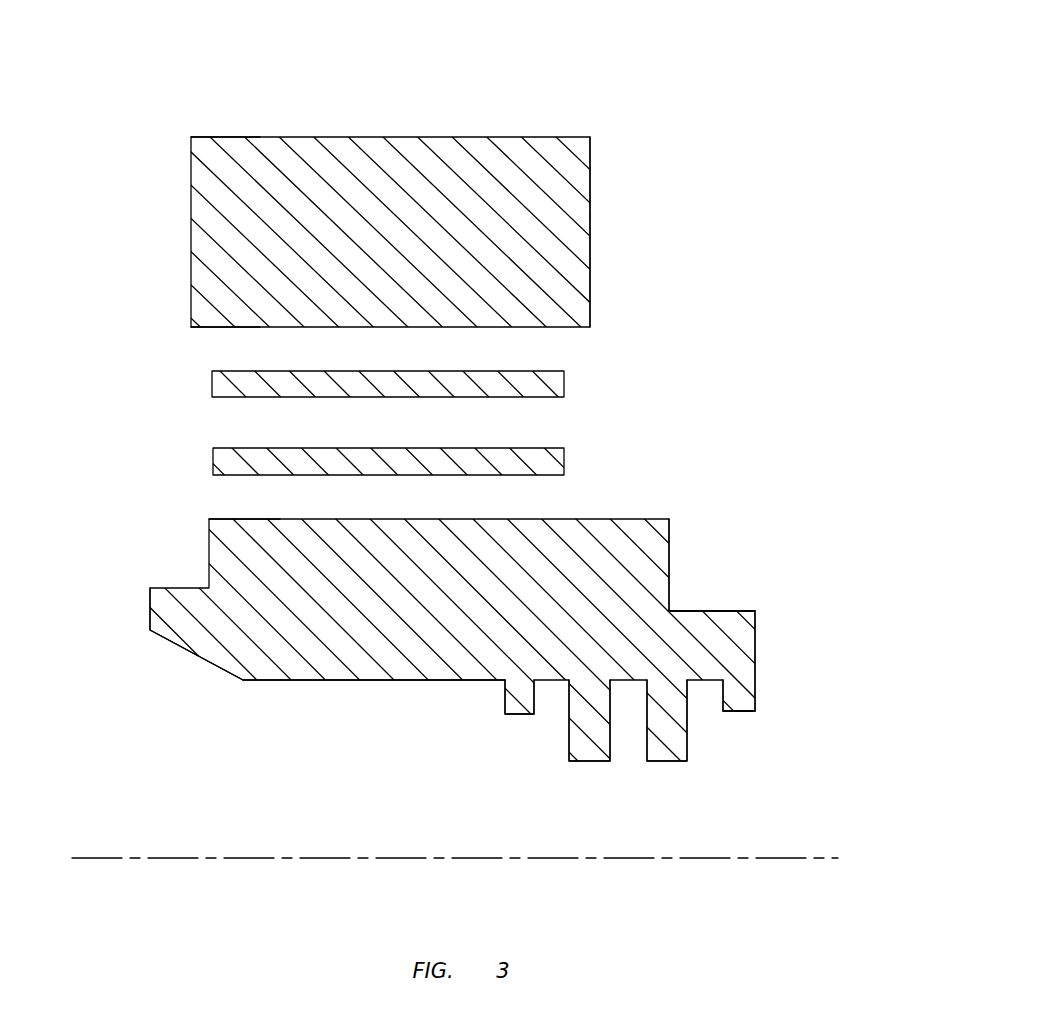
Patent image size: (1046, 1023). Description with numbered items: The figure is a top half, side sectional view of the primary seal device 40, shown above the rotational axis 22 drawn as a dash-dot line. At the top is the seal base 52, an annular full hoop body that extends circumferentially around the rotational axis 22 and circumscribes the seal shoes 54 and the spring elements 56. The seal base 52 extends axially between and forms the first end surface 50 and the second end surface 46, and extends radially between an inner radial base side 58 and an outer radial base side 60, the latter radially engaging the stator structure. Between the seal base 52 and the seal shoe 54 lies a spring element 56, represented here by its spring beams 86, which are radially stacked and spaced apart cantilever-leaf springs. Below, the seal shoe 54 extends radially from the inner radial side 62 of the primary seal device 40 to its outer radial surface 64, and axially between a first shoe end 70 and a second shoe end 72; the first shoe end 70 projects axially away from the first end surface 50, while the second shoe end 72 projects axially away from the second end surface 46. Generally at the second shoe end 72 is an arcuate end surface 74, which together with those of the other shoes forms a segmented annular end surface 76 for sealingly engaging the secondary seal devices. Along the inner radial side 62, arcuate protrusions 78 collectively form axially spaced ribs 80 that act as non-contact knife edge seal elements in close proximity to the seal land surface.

The primary seal device 40 is at (662, 77).
The first end surface 50 is at (191, 241).
The seal base 52 is at (590, 216).
The second end surface 46 is at (590, 264).
The outer radial base side 60 is at (213, 137).
The inner radial base side 58 is at (202, 327).
The spring element 56 is at (601, 406).
The spring beam 86 is at (226, 397).
The seal shoe 54 is at (692, 558).
The outer radial surface 64 is at (213, 519).
The first shoe end 70 is at (150, 603).
The inner radial side 62 is at (380, 700).
The second shoe end 72 is at (755, 638).
The arcuate end surface 74 is at (712, 533).
The end surface 76 is at (670, 537).
The arcuate protrusion 78 is at (583, 753).
The rib 80 is at (505, 709).
The rotational axis 22 is at (733, 858).